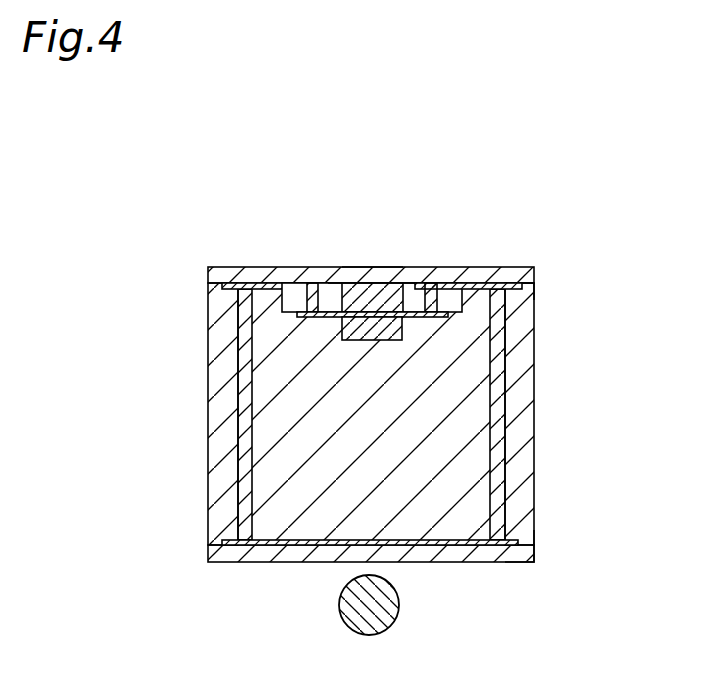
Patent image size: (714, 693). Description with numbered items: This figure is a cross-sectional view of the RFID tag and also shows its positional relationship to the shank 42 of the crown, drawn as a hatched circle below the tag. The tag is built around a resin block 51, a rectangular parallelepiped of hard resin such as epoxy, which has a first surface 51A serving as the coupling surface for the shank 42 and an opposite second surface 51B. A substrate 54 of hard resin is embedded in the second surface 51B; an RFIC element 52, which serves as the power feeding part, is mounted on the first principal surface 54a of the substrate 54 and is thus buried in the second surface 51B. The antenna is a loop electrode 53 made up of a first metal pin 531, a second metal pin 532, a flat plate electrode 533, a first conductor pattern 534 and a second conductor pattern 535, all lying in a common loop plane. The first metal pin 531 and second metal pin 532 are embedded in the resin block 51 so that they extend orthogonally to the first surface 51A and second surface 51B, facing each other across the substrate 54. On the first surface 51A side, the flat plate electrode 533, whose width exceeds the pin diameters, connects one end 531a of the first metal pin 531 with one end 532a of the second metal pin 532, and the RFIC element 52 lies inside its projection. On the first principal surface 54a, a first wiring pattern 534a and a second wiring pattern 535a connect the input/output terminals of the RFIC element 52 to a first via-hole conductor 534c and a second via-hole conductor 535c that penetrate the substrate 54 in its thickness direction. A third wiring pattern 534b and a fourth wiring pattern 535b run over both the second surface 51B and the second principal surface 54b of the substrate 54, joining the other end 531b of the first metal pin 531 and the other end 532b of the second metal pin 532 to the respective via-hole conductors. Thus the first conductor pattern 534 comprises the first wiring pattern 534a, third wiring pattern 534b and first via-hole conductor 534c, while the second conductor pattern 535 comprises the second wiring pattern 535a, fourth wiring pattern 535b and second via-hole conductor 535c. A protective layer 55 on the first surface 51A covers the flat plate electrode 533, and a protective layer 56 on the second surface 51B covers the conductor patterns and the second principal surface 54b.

The shank 42 is at (385, 613).
The resin block 51 is at (210, 352).
The first surface 51A is at (523, 550).
The second surface 51B is at (528, 268).
The RFIC element 52 is at (368, 340).
The loop electrode 53 is at (222, 421).
The first metal pin 531 is at (247, 470).
The one end of the first metal pin 531a is at (243, 536).
The other end of the first metal pin 531b is at (245, 306).
The second metal pin 532 is at (497, 445).
The one end of the second metal pin 532a is at (497, 532).
The other end of the second metal pin 532b is at (498, 302).
The flat plate electrode 533 is at (463, 545).
The first conductor pattern 534 is at (300, 218).
The first wiring pattern 534a is at (333, 234).
The third wiring pattern 534b is at (245, 285).
The first via-hole conductor 534c is at (310, 288).
The second conductor pattern 535 is at (506, 218).
The second wiring pattern 535a is at (426, 236).
The fourth wiring pattern 535b is at (492, 284).
The second via-hole conductor 535c is at (447, 284).
The substrate 54 is at (462, 300).
The first principal surface 54a is at (453, 316).
The second principal surface 54b is at (375, 283).
The protective layer 55 is at (245, 552).
The protective layer 56 is at (217, 272).